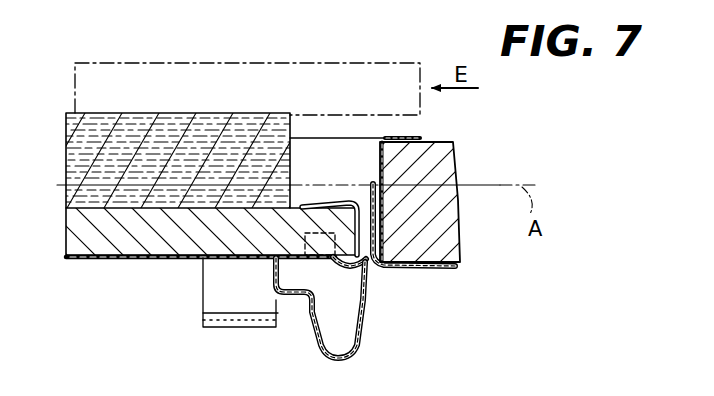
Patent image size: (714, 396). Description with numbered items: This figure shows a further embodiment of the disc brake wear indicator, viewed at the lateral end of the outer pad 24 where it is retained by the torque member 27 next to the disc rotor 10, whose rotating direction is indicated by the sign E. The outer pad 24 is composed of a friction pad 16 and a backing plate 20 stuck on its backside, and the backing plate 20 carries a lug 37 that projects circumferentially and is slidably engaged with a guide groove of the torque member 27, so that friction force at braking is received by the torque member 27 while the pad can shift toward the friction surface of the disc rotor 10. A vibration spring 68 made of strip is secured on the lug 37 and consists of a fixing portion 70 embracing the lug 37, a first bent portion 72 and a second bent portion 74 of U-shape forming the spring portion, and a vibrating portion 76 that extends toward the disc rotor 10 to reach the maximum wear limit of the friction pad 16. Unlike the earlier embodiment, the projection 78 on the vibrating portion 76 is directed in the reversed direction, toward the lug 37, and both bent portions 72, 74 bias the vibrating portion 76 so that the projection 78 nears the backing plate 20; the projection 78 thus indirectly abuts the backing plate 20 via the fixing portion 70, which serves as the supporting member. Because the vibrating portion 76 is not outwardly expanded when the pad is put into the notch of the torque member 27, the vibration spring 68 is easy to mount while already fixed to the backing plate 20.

The disc rotor 10 is at (431, 100).
The friction pad 16 is at (172, 127).
The backing plate 20 is at (130, 240).
The outer pad 24 is at (90, 262).
The torque member 27 is at (445, 243).
The lug 37 is at (313, 213).
The vibration spring 68 is at (312, 336).
The fixing portion 70 is at (345, 203).
The first bent portion 72 is at (268, 275).
The second bent portion 74 is at (360, 356).
The vibrating portion 76 is at (363, 203).
The projection 78 is at (377, 270).